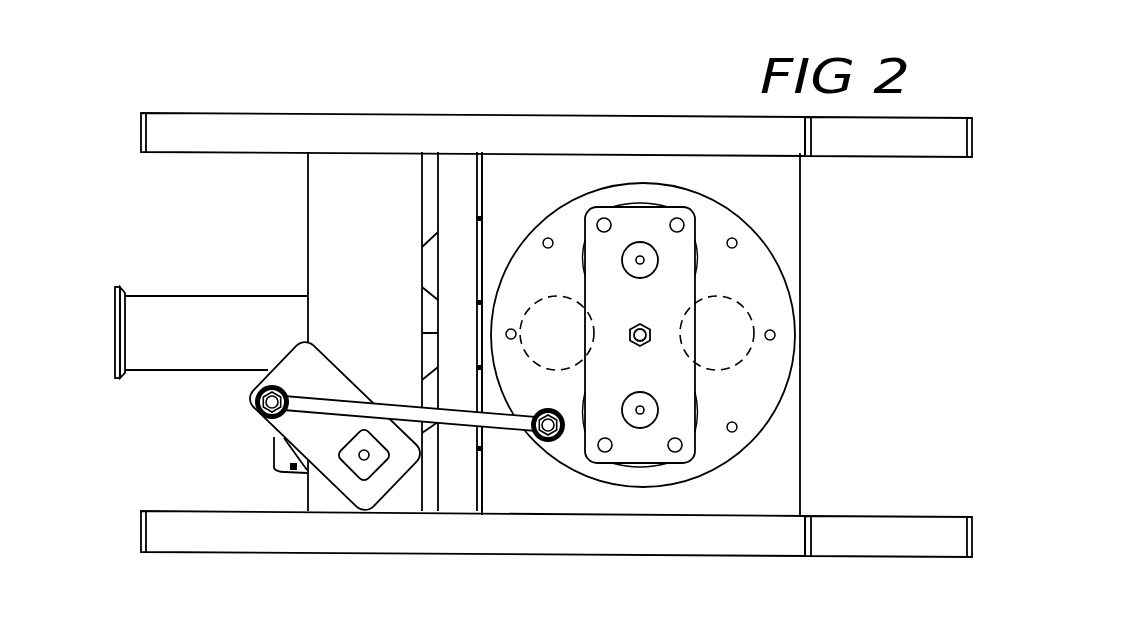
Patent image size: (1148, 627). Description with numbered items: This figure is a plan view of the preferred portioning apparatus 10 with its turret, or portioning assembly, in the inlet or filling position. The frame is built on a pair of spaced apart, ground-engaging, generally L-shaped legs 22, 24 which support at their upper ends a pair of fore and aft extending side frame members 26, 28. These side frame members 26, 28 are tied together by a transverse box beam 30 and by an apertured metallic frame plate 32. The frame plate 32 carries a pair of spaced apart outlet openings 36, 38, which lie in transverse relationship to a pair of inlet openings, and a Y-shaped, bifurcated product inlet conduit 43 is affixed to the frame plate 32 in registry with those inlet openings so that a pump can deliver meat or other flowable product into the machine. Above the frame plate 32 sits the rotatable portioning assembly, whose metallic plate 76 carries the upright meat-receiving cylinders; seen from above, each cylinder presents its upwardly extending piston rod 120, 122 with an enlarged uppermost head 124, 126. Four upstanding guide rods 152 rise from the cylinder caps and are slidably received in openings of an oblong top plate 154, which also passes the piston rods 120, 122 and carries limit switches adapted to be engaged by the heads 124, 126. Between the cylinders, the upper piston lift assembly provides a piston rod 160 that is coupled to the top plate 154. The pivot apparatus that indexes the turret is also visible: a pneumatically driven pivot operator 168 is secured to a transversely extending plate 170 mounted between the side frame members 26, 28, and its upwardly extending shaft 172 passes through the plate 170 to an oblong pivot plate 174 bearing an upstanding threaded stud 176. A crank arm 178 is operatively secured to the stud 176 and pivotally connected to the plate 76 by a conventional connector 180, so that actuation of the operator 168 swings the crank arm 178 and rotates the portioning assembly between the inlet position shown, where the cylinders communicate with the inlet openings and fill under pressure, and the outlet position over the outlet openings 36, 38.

The apparatus 10 is at (667, 100).
The ground-engaging L-shaped leg 22 is at (858, 533).
The ground-engaging L-shaped leg 24 is at (850, 145).
The side frame member 26 is at (633, 537).
The side frame member 28 is at (422, 128).
The transverse box beam 30 is at (467, 180).
The frame plate 32 is at (777, 438).
The outlet opening 36 is at (573, 283).
The outlet opening 38 is at (748, 355).
The product inlet conduit 43 is at (152, 308).
The metallic plate 76 is at (753, 253).
The piston rod 120 is at (640, 260).
The piston rod 122 is at (655, 408).
The piston rod head 124 is at (637, 247).
The piston rod head 126 is at (637, 425).
The guide rods 152 is at (677, 225).
The top plate 154 is at (625, 452).
The piston rod 160 is at (643, 323).
The pivot operator 168 is at (278, 473).
The transversely extending plate 170 is at (342, 223).
The shaft 172 is at (365, 458).
The pivot plate 174 is at (340, 485).
The threaded stud 176 is at (263, 422).
The crank arm 178 is at (503, 421).
The connector 180 is at (568, 412).